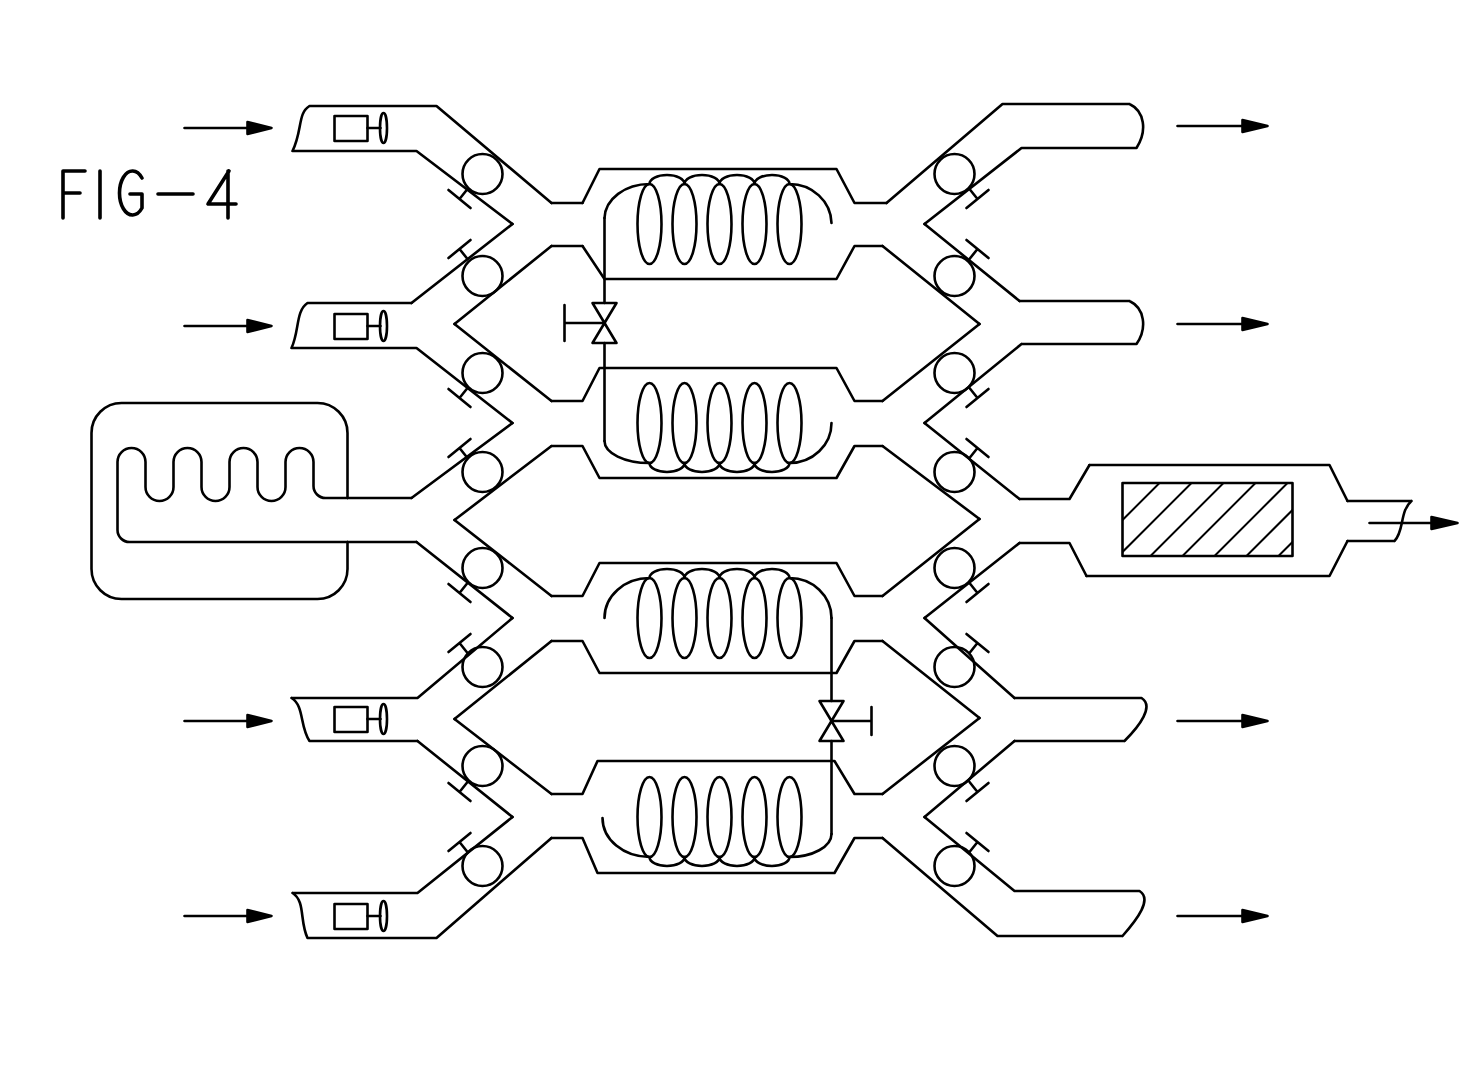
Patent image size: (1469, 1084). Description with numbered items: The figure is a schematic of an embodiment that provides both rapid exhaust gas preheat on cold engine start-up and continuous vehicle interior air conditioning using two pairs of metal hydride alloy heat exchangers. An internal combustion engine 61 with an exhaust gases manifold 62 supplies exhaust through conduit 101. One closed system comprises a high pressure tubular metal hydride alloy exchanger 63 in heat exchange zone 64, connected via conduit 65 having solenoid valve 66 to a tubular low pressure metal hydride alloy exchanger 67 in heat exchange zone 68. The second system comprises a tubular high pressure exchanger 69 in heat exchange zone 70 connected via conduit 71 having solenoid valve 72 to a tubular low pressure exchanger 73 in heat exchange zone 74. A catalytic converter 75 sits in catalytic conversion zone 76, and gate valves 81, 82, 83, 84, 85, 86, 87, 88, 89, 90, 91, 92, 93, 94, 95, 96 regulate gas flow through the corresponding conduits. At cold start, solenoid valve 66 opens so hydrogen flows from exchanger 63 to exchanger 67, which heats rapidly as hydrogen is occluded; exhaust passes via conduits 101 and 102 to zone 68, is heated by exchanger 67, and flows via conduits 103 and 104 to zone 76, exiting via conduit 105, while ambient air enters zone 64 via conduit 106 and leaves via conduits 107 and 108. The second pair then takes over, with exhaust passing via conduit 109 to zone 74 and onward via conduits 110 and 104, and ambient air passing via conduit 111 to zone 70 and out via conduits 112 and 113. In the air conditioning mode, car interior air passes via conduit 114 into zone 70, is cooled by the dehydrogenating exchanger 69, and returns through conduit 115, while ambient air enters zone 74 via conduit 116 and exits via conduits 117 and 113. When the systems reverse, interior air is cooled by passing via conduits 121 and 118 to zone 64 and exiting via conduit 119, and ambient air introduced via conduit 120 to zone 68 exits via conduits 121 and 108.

The internal combustion engine 61 is at (145, 413).
The exhaust gases manifold 62 is at (203, 532).
The high pressure tubular metal hydride alloy exchanger 63 is at (697, 168).
The heat exchange zone 64 is at (760, 168).
The conduit 65 is at (584, 205).
The solenoid valve 66 is at (613, 330).
The tubular low pressure metal hydride alloy exchanger 67 is at (740, 465).
The heat exchange zone 68 is at (755, 368).
The tubular high pressure metal hydride alloy exchanger 69 is at (665, 860).
The heat exchange zone 70 is at (753, 865).
The conduit 71 is at (832, 805).
The solenoid valve 72 is at (823, 707).
The tubular low pressure metal hydride alloy exchanger 73 is at (637, 617).
The heat exchange zone 74 is at (690, 665).
The catalytic converter 75 is at (1250, 487).
The catalytic conversion zone 76 is at (1298, 567).
The gate valve 81 is at (480, 174).
The gate valve 82 is at (500, 277).
The gate valve 83 is at (470, 366).
The gate valve 84 is at (503, 473).
The gate valve 85 is at (503, 562).
The gate valve 86 is at (468, 655).
The gate valve 87 is at (484, 757).
The gate valve 88 is at (472, 872).
The gate valve 89 is at (940, 167).
The gate valve 90 is at (988, 288).
The gate valve 91 is at (967, 362).
The gate valve 92 is at (963, 472).
The gate valve 93 is at (968, 565).
The gate valve 94 is at (993, 672).
The gate valve 95 is at (963, 760).
The gate valve 96 is at (963, 872).
The conduit 101 is at (345, 530).
The conduit 102 is at (447, 488).
The conduit 103 is at (997, 490).
The conduit 104 is at (1053, 530).
The conduit 105 is at (1368, 502).
The conduit 106 is at (445, 292).
The conduit 107 is at (987, 287).
The conduit 108 is at (1112, 328).
The conduit 109 is at (450, 548).
The conduit 110 is at (912, 580).
The conduit 111 is at (437, 745).
The conduit 112 is at (990, 742).
The conduit 113 is at (1107, 720).
The conduit 114 is at (452, 908).
The conduit 115 is at (1090, 910).
The conduit 116 is at (440, 690).
The conduit 117 is at (1000, 695).
The conduit 118 is at (533, 205).
The conduit 119 is at (1098, 133).
The conduit 120 is at (453, 335).
The conduit 121 is at (412, 137).